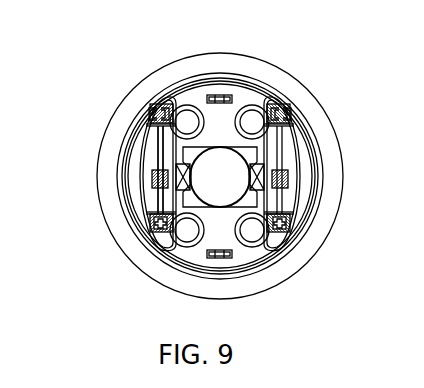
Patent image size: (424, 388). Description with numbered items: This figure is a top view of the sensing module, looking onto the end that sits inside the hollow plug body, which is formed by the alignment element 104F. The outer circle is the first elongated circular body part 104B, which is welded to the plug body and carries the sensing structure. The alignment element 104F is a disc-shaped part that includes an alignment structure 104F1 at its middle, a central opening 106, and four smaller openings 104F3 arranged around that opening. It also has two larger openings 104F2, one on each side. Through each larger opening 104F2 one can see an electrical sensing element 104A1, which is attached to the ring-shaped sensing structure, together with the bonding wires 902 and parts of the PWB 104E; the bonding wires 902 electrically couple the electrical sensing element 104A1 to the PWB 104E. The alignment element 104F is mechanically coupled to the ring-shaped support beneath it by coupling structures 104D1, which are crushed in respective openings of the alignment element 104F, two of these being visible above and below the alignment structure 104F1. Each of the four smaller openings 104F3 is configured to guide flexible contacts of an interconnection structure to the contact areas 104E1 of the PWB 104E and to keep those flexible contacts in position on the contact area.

The central opening 106 is at (220, 170).
The first elongated circular body part 104B is at (318, 124).
The coupling structures 104D1 is at (208, 96).
The smaller openings 104F3 is at (183, 120).
The bonding wires 902 is at (153, 180).
The electrical sensing element 104A1 is at (160, 188).
The PWB 104E is at (153, 222).
The contact areas 104E1 is at (186, 229).
The alignment structure 104F1 is at (258, 182).
The larger openings 104F2 is at (290, 173).
The alignment element 104F is at (273, 240).